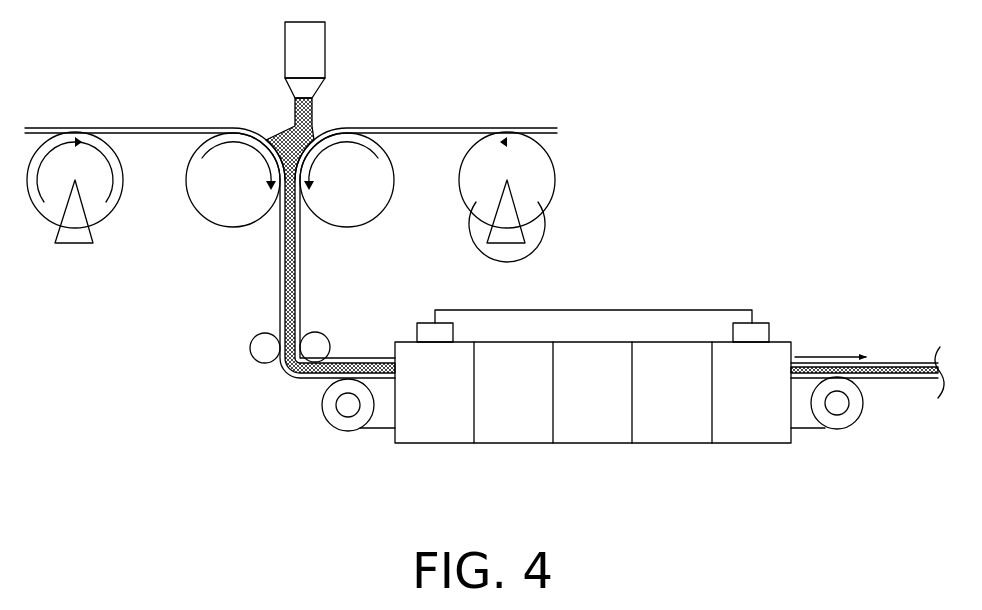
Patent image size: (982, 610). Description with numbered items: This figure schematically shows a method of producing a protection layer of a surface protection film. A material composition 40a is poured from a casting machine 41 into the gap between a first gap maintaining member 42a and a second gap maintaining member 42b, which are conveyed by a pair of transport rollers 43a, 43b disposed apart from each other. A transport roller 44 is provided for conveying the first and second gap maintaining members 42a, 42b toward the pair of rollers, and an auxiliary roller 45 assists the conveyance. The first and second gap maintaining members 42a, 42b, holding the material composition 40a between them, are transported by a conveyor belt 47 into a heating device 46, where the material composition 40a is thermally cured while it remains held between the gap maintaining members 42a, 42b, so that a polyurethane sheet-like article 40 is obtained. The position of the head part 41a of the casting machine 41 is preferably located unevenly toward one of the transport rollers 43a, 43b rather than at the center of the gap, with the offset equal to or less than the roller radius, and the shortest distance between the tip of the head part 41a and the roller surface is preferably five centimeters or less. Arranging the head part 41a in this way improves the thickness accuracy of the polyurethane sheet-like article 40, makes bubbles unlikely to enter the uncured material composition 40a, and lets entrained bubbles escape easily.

The polyurethane sheet-like article 40 is at (905, 377).
The material composition 40a is at (295, 120).
The casting machine 41 is at (313, 48).
The head part 41a is at (314, 90).
The first gap maintaining member 42a is at (163, 127).
The second gap maintaining member 42b is at (427, 127).
The transport roller 43a is at (223, 215).
The transport roller 43b is at (363, 208).
The transport roller 44 is at (105, 203).
The auxiliary roller 45 is at (262, 348).
The heating device 46 is at (670, 437).
The conveyor belt 47 is at (343, 423).